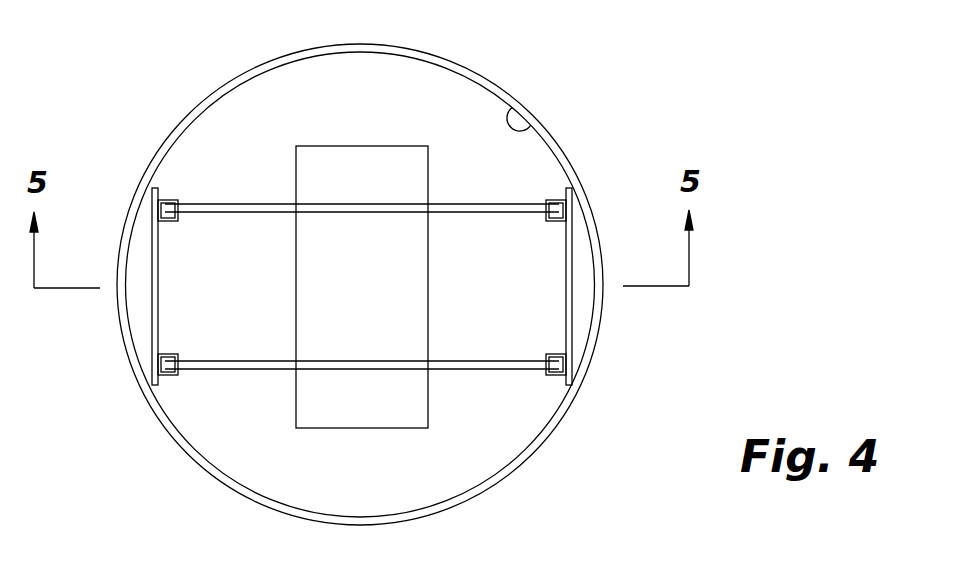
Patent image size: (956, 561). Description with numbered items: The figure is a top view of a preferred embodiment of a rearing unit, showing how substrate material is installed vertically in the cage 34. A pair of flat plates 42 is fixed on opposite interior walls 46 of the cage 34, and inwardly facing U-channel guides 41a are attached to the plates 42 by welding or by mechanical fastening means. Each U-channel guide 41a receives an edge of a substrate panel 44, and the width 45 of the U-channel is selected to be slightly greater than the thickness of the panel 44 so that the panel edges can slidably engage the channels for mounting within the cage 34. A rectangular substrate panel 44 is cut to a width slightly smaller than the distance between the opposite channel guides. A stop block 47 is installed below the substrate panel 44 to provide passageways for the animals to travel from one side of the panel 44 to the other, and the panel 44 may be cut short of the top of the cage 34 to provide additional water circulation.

The cage 34 is at (480, 500).
The upper U-channel guide 41a is at (162, 190).
The flat plate 42 is at (147, 313).
The substrate panel 44 is at (222, 370).
The width of the U-channel 45 is at (180, 201).
The interior wall 46 is at (535, 133).
The stop block 47 is at (378, 146).